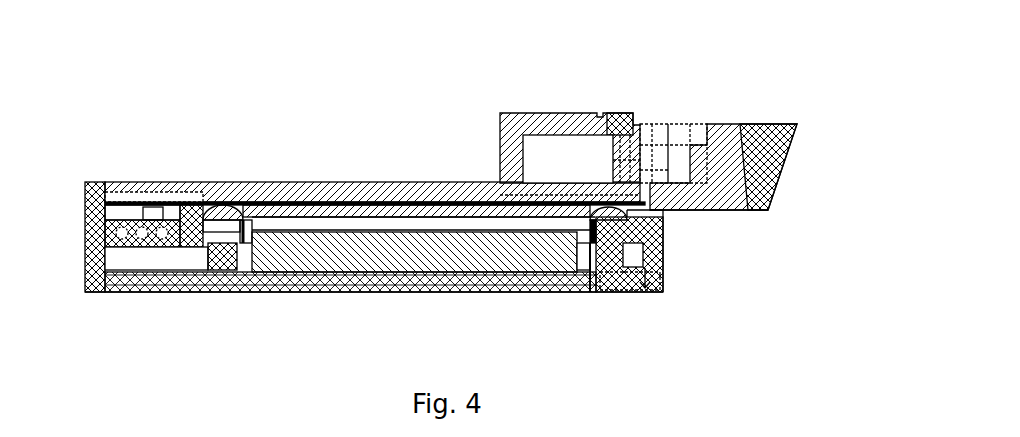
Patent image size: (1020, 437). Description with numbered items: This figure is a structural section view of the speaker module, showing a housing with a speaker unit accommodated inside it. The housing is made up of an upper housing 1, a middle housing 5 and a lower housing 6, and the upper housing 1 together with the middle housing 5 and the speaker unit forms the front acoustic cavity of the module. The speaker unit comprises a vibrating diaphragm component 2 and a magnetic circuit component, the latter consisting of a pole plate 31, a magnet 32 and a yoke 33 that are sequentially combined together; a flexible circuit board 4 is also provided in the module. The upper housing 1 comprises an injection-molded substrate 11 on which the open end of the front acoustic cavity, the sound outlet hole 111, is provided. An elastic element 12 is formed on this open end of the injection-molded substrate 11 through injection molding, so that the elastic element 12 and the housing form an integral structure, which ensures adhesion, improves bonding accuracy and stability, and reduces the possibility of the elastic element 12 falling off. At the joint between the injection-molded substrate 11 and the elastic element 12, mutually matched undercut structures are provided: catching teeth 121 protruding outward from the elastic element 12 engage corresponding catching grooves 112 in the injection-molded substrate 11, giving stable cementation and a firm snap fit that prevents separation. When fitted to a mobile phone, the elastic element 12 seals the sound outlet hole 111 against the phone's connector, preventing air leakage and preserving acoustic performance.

The upper housing 1 is at (470, 133).
The vibrating diaphragm component 2 is at (200, 183).
The flexible circuit board 4 is at (93, 185).
The middle housing 5 is at (663, 247).
The lower housing 6 is at (633, 293).
The injection-molded substrate 11 is at (553, 128).
The sound outlet hole 111 is at (668, 120).
The elastic element 12 is at (783, 165).
The catching teeth 121 is at (760, 120).
The catching groove 112 is at (740, 210).
The pole plate 31 is at (353, 238).
The magnet 32 is at (480, 290).
The yoke 33 is at (590, 290).